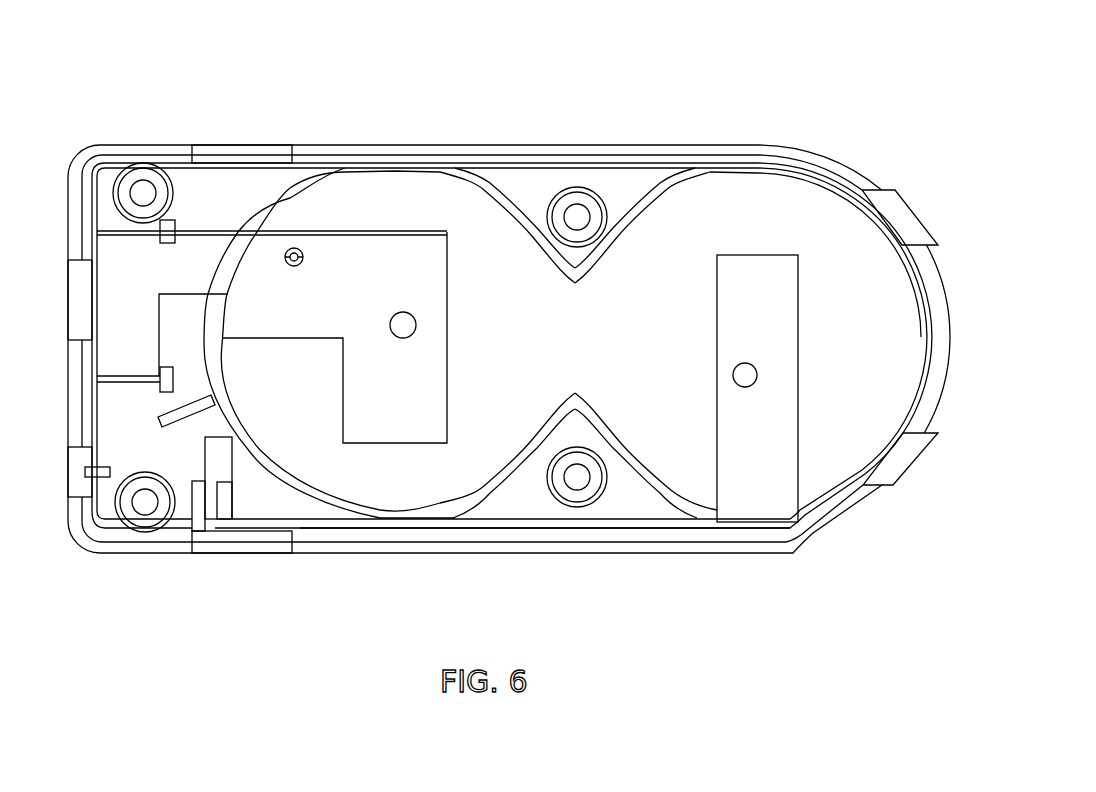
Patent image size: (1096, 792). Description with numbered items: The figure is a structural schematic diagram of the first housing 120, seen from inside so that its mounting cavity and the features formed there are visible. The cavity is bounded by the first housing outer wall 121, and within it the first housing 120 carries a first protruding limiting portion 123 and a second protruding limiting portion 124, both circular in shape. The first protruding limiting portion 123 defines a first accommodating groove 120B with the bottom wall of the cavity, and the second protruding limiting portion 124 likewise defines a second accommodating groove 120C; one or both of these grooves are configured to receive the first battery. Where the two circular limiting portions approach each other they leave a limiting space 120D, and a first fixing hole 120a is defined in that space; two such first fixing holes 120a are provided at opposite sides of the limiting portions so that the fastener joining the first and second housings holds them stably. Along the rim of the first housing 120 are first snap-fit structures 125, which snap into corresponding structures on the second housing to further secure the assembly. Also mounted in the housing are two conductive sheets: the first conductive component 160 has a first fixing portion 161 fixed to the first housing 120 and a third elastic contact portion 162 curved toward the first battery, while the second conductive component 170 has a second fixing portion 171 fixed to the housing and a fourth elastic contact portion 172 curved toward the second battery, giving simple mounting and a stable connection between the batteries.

The first housing 120 is at (546, 20).
The first accommodating groove 120B is at (812, 218).
The second accommodating groove 120C is at (374, 186).
The limiting space 120D is at (660, 166).
The first fixing hole 120a is at (590, 208).
The first housing outer wall 121 is at (551, 216).
The first protruding limiting portion 123 is at (676, 183).
The second protruding limiting portion 124 is at (492, 190).
The first snap-fit structure 125 is at (905, 228).
The first conductive component 160 is at (575, 582).
The first fixing portion 161 is at (545, 530).
The third elastic contact portion 162 is at (798, 361).
The second conductive component 170 is at (520, 354).
The second fixing portion 171 is at (268, 312).
The fourth elastic contact portion 172 is at (449, 358).